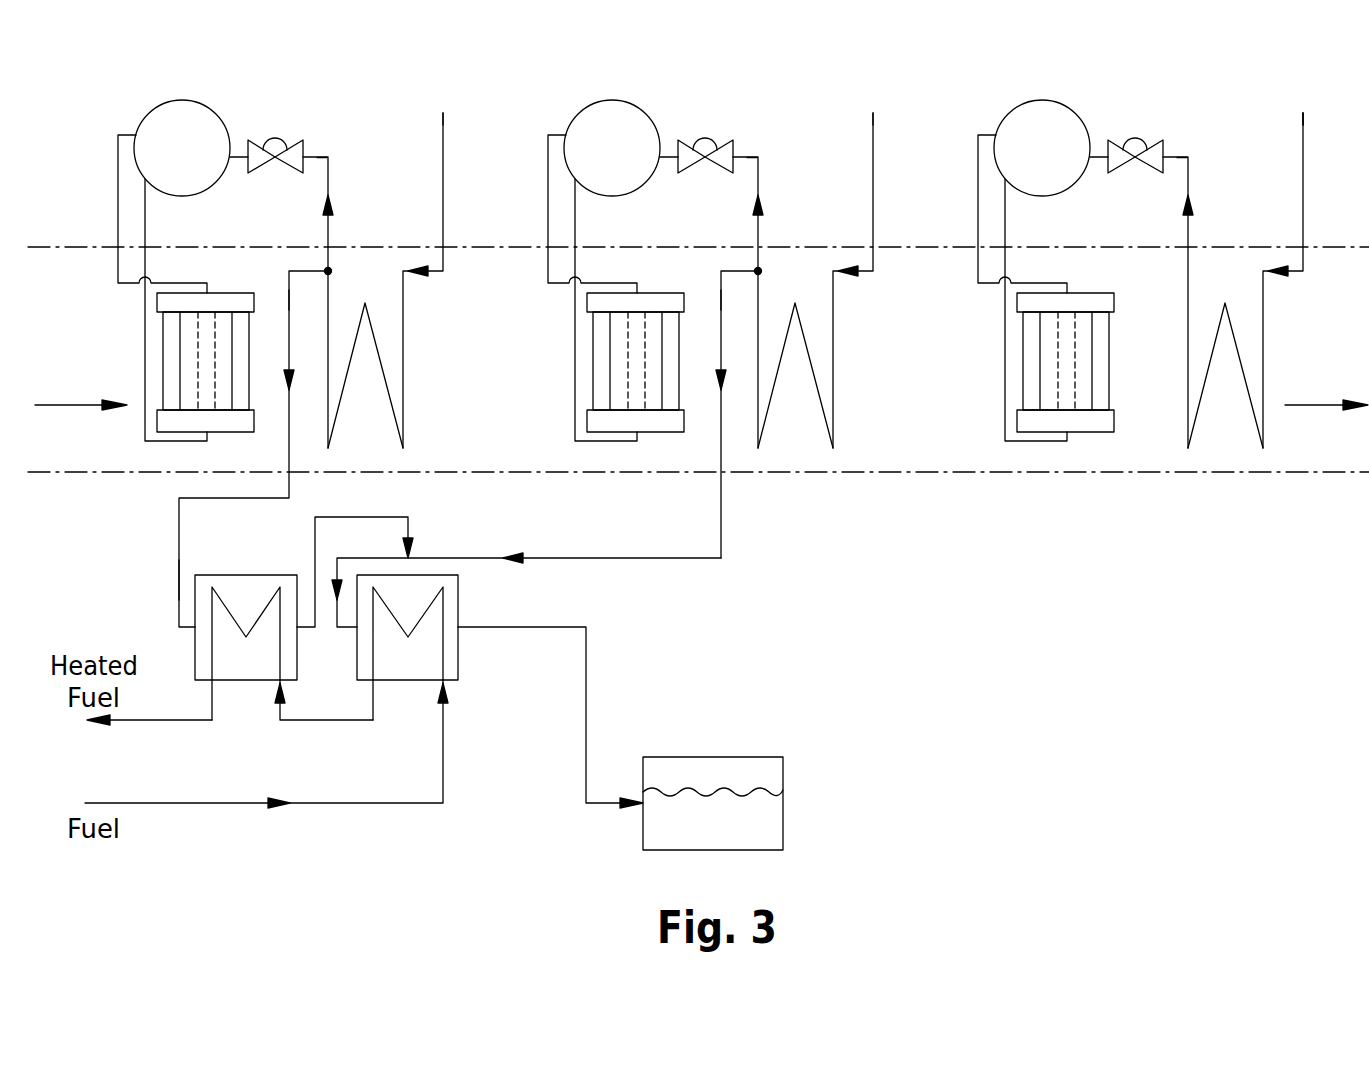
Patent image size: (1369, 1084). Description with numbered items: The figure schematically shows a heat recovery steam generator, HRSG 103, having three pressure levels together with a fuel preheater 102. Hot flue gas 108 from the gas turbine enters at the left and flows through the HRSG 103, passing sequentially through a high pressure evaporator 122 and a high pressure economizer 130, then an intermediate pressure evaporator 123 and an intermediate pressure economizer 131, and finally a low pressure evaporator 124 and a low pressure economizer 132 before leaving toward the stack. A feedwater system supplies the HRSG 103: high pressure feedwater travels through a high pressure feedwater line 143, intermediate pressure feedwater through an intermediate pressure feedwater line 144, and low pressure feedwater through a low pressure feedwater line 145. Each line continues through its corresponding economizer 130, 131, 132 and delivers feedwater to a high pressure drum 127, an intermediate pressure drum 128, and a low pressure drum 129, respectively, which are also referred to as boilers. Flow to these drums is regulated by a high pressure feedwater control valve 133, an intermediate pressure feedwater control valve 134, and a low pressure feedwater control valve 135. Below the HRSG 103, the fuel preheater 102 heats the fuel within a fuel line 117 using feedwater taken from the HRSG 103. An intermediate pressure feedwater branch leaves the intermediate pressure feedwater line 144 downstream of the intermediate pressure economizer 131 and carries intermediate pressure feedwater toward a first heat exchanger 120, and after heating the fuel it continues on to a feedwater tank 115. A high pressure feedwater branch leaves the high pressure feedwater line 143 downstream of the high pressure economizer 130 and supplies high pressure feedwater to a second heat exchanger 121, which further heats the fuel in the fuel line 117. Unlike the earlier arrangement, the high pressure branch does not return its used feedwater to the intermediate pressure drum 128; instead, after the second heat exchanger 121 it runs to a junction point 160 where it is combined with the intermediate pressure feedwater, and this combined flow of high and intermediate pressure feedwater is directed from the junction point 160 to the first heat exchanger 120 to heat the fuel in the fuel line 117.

The fuel preheater 102 is at (348, 764).
The HRSG 103 is at (1268, 122).
The hot flue gas 108 is at (72, 403).
The feedwater tank 115 is at (721, 770).
The fuel line 117 is at (155, 723).
The first heat exchanger 120 is at (429, 672).
The second heat exchanger 121 is at (268, 672).
The high pressure evaporator 122 is at (221, 379).
The intermediate pressure evaporator 123 is at (635, 362).
The low pressure evaporator 124 is at (1065, 362).
The high pressure drum 127 is at (204, 144).
The intermediate pressure drum 128 is at (612, 148).
The low pressure drum 129 is at (1042, 148).
The high pressure economizer 130 is at (387, 455).
The intermediate pressure economizer 131 is at (795, 379).
The low pressure economizer 132 is at (1225, 379).
The high pressure feedwater control valve 133 is at (276, 138).
The intermediate pressure feedwater control valve 134 is at (705, 121).
The low pressure feedwater control valve 135 is at (1135, 121).
The high pressure feedwater line 143 is at (317, 157).
The intermediate pressure feedwater line 144 is at (828, 230).
The low pressure feedwater line 145 is at (1258, 230).
The junction point 160 is at (412, 553).